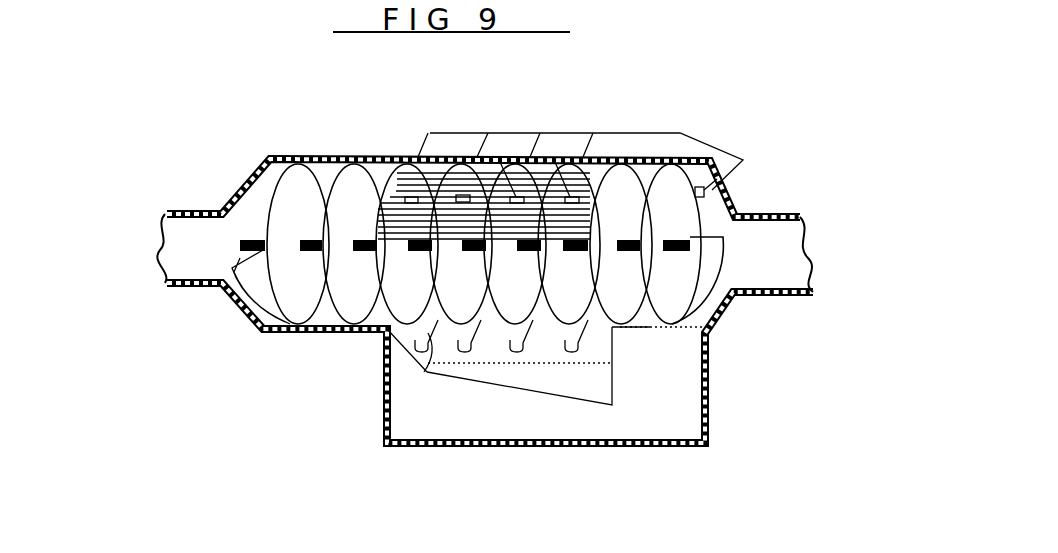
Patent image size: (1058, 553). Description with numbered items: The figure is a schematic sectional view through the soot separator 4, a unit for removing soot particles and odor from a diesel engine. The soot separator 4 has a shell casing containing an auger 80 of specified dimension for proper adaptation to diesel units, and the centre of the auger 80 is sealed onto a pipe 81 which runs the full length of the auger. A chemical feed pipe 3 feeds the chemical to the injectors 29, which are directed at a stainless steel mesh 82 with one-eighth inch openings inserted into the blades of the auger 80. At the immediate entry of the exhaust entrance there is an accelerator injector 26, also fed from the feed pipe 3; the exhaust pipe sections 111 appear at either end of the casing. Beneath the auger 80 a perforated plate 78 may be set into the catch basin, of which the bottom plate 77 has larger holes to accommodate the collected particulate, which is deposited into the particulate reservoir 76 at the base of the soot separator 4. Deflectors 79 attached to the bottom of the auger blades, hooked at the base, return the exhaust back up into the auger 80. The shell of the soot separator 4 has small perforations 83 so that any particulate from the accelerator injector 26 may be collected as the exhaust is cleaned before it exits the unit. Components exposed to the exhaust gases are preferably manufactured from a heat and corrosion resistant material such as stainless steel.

The chemical feed pipe 3 is at (580, 133).
The soot separator 4 is at (299, 157).
The accelerator injector 26 is at (723, 185).
The injectors 29 is at (460, 195).
The particulate reservoir 76 is at (707, 403).
The bottom plate 77 is at (563, 397).
The perforated plate 78 is at (483, 365).
The deflectors 79 is at (427, 372).
The auger 80 is at (307, 312).
The pipe 81 is at (230, 297).
The stainless steel mesh 82 is at (500, 158).
The small perforations 83 is at (652, 330).
The pipe 111 is at (807, 340).